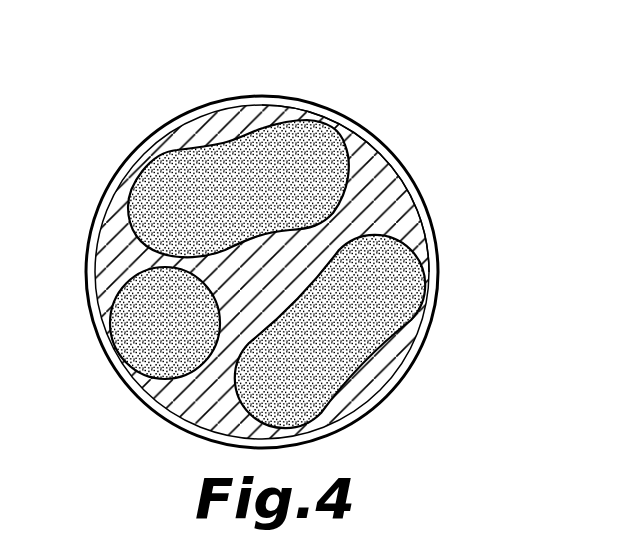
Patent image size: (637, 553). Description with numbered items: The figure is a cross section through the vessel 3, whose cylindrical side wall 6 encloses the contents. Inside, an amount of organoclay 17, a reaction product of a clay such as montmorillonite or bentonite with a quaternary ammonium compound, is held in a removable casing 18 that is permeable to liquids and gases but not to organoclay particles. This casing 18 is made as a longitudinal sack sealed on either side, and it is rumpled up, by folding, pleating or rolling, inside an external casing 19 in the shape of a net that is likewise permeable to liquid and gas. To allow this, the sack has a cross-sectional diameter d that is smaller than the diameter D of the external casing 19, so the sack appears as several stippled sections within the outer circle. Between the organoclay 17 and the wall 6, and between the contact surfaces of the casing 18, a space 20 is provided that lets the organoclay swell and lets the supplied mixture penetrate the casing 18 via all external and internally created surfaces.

The vessel 3 is at (437, 331).
The cylindrical side wall 6 is at (398, 383).
The organoclay 17 is at (232, 280).
The removable casing 18 is at (366, 139).
The external casing 19 is at (440, 282).
The space 20 is at (131, 279).
The diameter of the sack d is at (258, 289).
The diameter of the external casing D is at (430, 235).